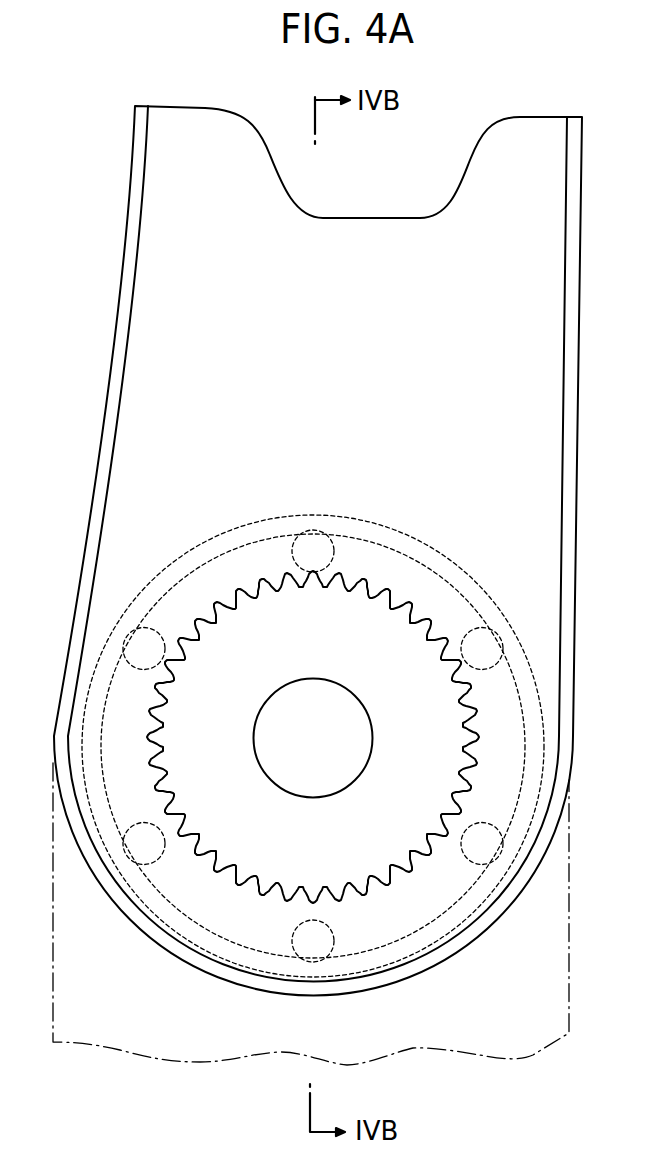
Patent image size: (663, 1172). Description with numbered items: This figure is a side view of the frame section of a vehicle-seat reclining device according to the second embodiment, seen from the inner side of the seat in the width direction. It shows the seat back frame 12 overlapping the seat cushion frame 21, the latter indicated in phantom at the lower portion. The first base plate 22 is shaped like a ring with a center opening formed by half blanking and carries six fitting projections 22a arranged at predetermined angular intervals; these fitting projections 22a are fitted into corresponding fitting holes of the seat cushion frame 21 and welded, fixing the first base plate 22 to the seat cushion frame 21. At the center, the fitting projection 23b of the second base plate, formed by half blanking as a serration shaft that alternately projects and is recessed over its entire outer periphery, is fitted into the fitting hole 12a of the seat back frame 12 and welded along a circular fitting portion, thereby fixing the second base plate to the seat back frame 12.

The seat back frame 12 is at (537, 278).
The fitting hole 12a is at (325, 887).
The seat cushion frame 21 is at (543, 1055).
The first base plate 22 is at (375, 518).
The fitting projections 22a is at (290, 548).
The fitting projection 23b is at (368, 888).